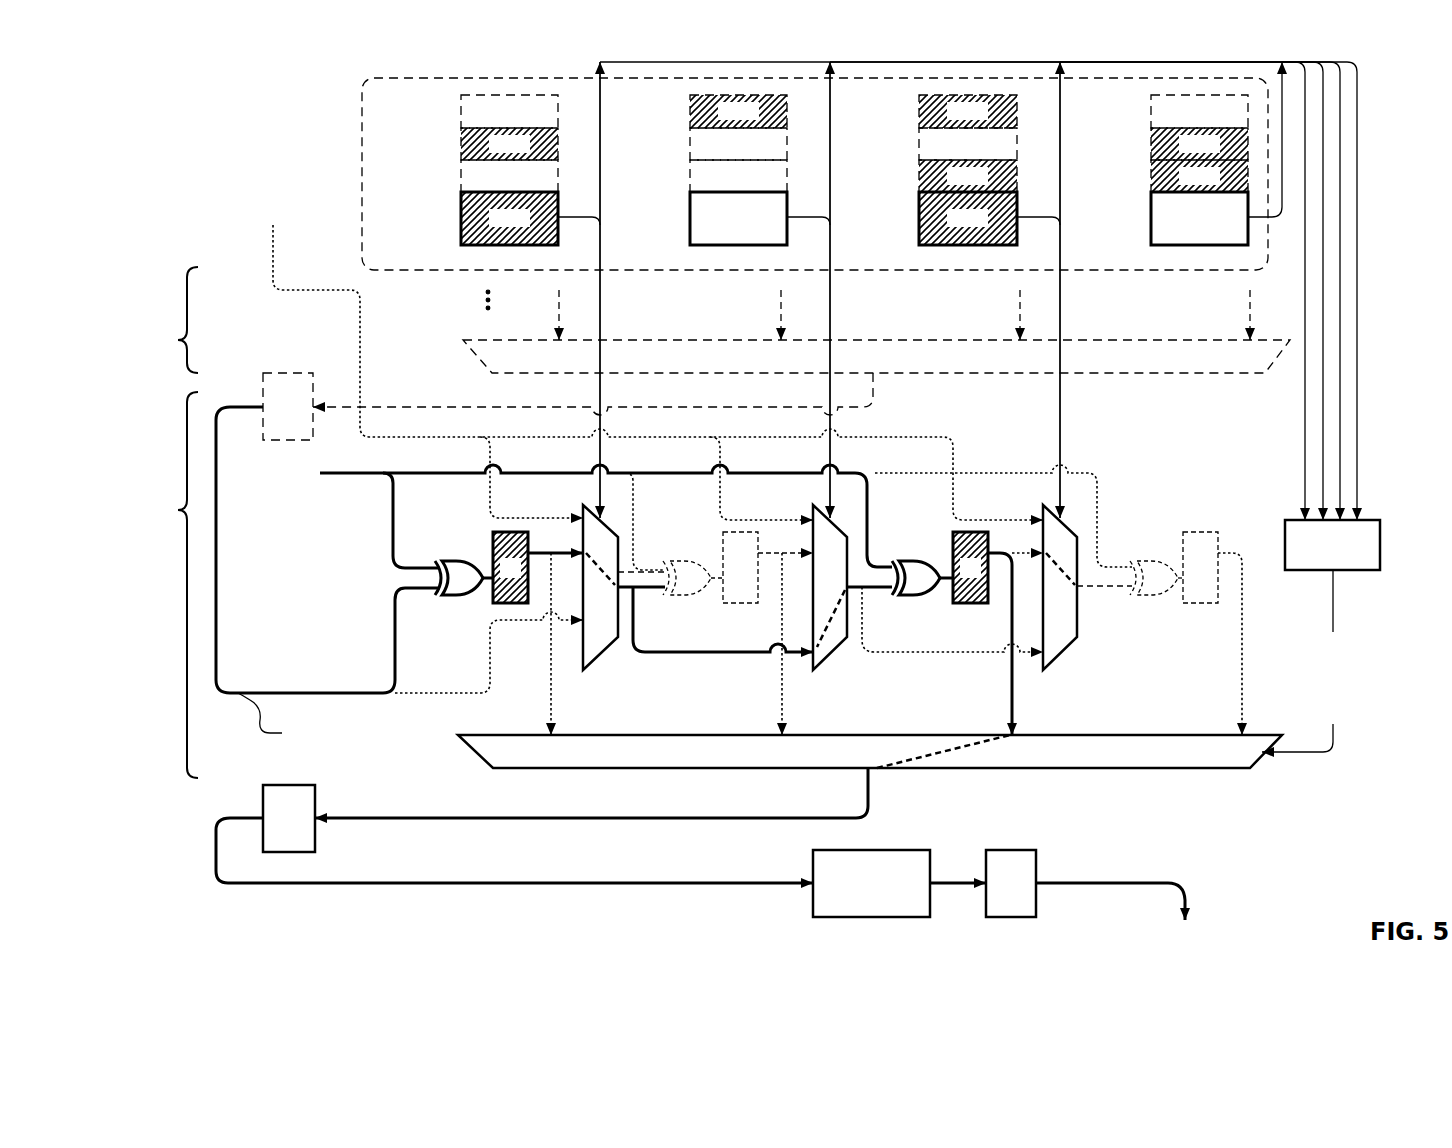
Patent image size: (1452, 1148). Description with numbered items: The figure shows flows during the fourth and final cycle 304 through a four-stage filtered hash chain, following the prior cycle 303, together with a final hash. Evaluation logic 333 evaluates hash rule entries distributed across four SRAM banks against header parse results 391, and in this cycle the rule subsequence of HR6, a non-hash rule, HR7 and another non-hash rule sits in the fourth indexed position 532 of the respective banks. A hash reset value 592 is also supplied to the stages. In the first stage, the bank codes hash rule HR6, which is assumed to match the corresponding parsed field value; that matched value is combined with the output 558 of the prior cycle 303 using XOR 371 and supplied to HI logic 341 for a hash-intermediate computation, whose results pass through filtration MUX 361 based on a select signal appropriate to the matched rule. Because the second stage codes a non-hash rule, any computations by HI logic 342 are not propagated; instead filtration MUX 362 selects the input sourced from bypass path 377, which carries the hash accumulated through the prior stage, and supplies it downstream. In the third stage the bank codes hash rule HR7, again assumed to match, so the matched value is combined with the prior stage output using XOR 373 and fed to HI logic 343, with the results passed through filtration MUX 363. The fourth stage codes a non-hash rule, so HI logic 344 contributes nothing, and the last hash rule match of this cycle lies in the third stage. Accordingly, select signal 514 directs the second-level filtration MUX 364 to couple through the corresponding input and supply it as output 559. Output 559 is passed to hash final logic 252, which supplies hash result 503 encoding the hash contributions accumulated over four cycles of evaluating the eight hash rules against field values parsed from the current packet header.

The evaluation logic 333 is at (410, 110).
The fourth indexed position 532 is at (452, 197).
The hash reset value 592 is at (647, 312).
The prior cycle 303 is at (170, 353).
The fourth and final cycle 304 is at (170, 520).
The header parse results 391 is at (689, 512).
The output of prior cycle 558 is at (218, 615).
The XOR 371 is at (458, 560).
The XOR 373 is at (920, 560).
The HI logic 341 is at (500, 604).
The HI logic 342 is at (723, 604).
The HI logic 343 is at (953, 604).
The HI logic 344 is at (1185, 532).
The filtration MUX 361 is at (598, 653).
The filtration MUX 362 is at (830, 653).
The filtration MUX 363 is at (1062, 653).
The second-level filtration MUX 364 is at (1050, 768).
The bypass path 377 is at (775, 655).
The output 559 is at (560, 820).
The select signal 514 is at (1333, 628).
The hash final (HF) logic 252 is at (896, 896).
The hash result 503 is at (1333, 868).